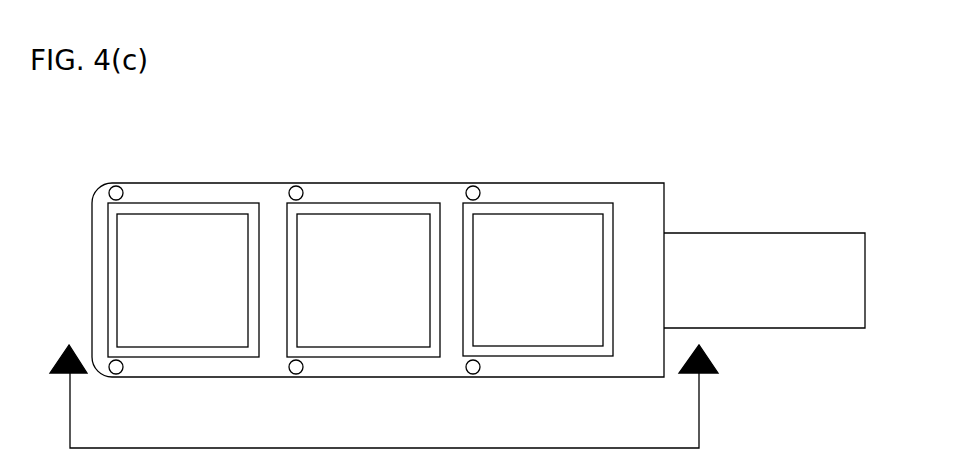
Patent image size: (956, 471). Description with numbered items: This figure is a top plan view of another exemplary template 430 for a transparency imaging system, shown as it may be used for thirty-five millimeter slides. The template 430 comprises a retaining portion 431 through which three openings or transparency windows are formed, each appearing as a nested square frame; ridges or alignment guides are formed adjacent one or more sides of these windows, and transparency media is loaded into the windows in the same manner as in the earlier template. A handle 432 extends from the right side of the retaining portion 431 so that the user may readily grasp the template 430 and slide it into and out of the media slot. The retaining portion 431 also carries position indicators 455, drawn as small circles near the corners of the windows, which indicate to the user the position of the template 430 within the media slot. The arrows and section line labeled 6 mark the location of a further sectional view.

The template 430 is at (478, 252).
The retaining portion 431 is at (617, 182).
The handle 432 is at (712, 233).
The position indicators 455 is at (470, 365).
The section line 6- 6 is at (73, 432).